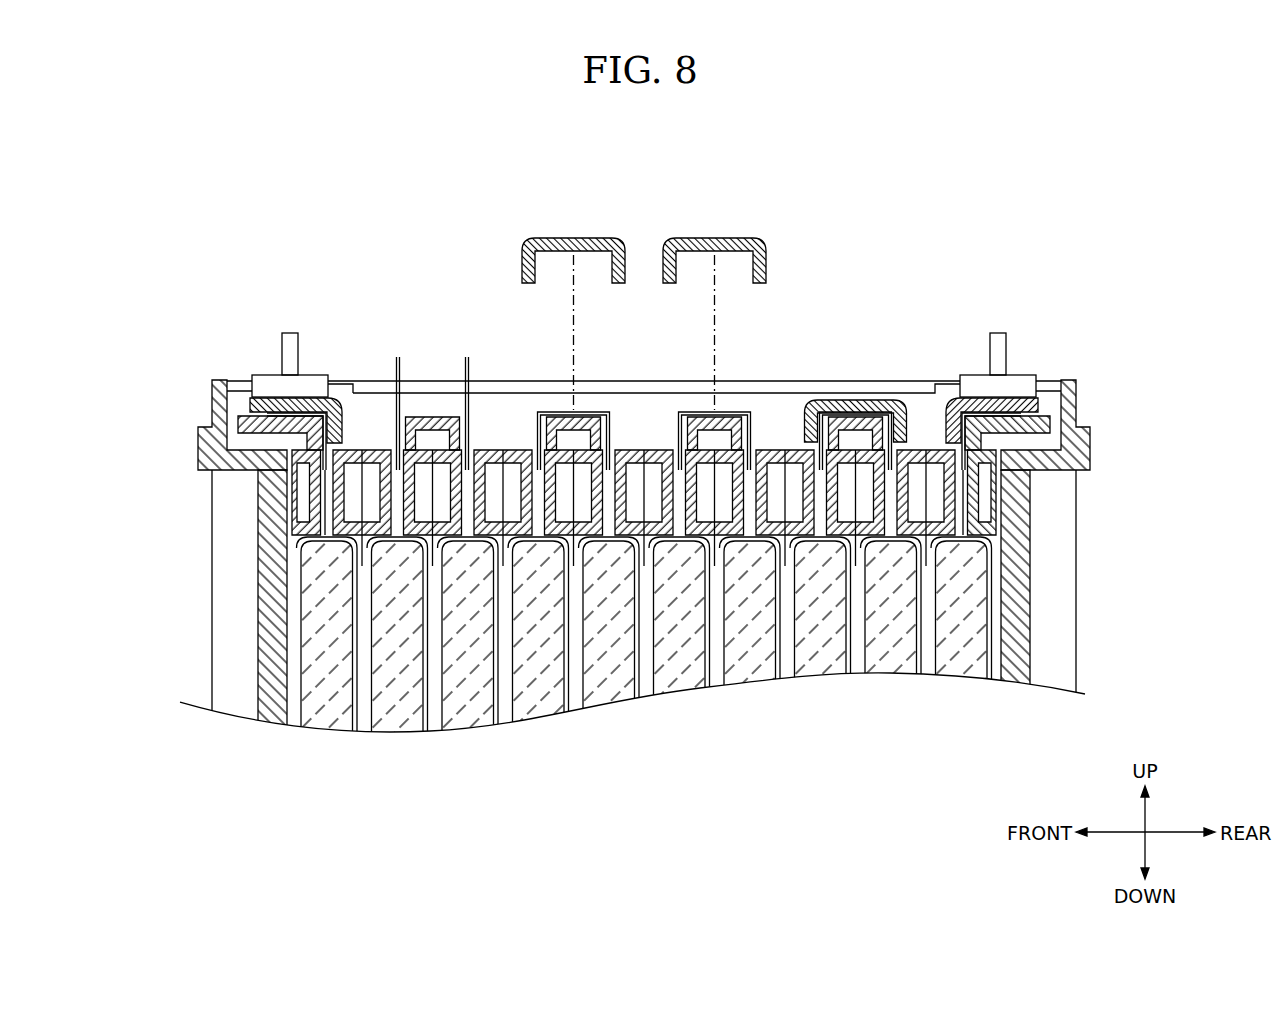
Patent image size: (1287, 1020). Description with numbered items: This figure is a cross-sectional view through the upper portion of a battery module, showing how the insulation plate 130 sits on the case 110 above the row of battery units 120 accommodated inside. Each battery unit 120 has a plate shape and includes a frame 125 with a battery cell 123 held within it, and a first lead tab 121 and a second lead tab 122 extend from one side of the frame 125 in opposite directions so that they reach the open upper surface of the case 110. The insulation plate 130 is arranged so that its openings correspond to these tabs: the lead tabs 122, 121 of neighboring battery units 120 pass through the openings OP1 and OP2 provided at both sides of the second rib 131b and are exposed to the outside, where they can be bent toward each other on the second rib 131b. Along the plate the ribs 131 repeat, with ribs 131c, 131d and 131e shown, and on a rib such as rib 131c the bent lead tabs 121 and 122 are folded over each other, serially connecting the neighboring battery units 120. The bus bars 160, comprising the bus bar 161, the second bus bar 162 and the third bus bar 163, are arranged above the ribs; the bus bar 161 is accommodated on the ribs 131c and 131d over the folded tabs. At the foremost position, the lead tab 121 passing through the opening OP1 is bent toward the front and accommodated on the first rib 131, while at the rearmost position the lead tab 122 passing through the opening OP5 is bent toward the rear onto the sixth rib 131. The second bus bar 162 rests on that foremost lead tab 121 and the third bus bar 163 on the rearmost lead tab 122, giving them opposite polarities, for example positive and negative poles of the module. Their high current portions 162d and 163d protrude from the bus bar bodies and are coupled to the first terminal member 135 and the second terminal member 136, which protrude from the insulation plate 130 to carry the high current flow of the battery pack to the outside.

The case 110 is at (1025, 607).
The battery unit 120 is at (644, 688).
The first lead tab 121 is at (253, 425).
The second lead tab 122 is at (397, 378).
The battery cell 123 is at (610, 702).
The frame 125 is at (655, 545).
The insulation plate 130 is at (1085, 397).
The rib 131 is at (288, 432).
The second rib 131b is at (432, 366).
The rib 131c is at (580, 420).
The rib 131d is at (742, 418).
The rib 131e is at (838, 420).
The first terminal member 135 is at (282, 336).
The second terminal member 136 is at (998, 335).
The bus bar 160 is at (671, 293).
The bus bar 161 is at (866, 405).
The second bus bar 162 is at (318, 398).
The third bus bar 163 is at (1018, 405).
The high current portion 162d is at (265, 376).
The high current portion 163d is at (1040, 376).
The opening OP1 is at (368, 423).
The opening OP2 is at (502, 413).
The opening OP5 is at (922, 412).